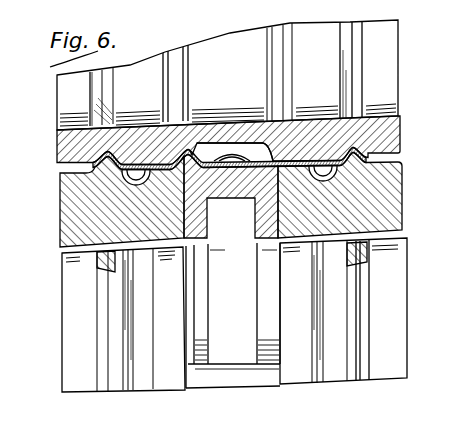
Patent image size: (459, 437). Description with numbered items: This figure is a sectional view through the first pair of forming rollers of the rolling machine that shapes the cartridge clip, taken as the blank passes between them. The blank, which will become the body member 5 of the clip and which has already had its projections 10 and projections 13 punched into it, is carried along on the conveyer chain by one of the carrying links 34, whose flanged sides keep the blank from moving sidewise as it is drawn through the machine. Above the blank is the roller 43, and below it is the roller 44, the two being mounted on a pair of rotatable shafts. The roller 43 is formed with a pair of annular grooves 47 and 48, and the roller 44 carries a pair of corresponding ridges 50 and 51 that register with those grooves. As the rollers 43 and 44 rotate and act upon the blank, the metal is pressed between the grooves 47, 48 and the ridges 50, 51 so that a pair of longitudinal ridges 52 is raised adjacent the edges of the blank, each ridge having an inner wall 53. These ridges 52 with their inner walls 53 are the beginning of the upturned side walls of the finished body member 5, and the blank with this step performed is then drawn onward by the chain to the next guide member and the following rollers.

The body member 5 is at (253, 160).
The projections 10 is at (222, 156).
The projections 13 is at (150, 183).
The carrying links 34 is at (214, 270).
The roller 43 is at (399, 80).
The roller 44 is at (406, 268).
The annular groove 47 is at (58, 104).
The annular groove 48 is at (348, 63).
The ridge 50 is at (107, 262).
The ridge 51 is at (365, 328).
The longitudinal ridges 52 is at (402, 141).
The inner walls 53 is at (107, 157).